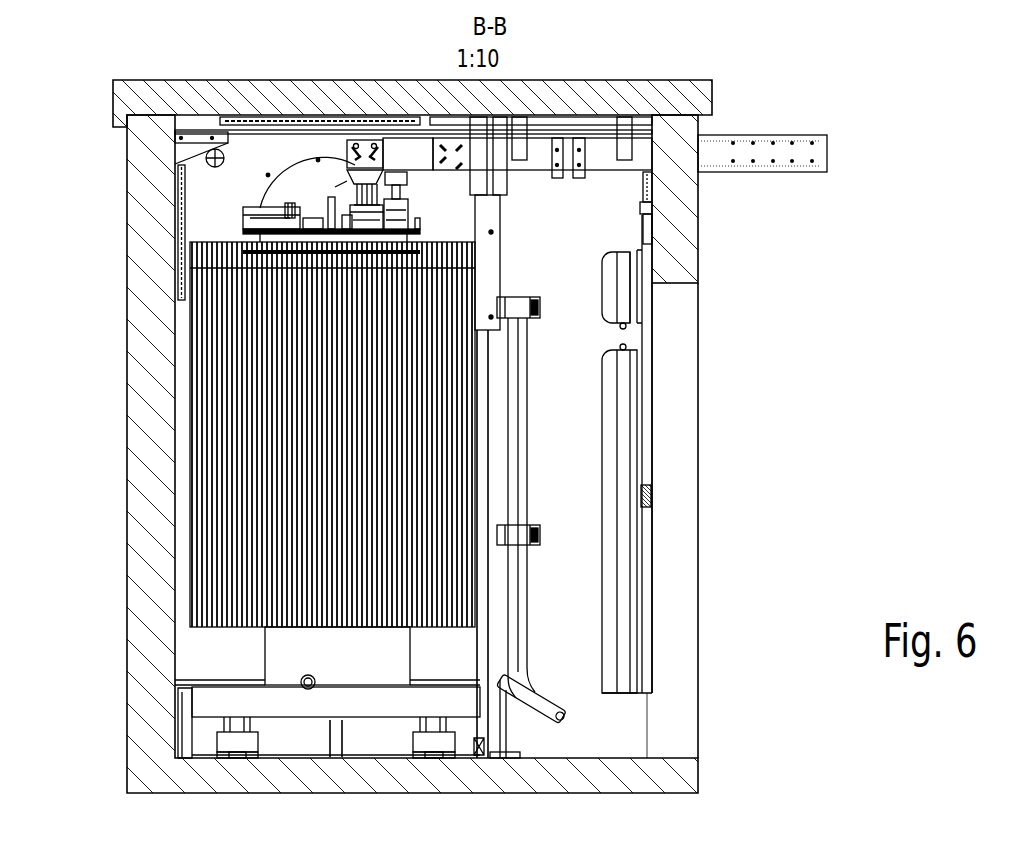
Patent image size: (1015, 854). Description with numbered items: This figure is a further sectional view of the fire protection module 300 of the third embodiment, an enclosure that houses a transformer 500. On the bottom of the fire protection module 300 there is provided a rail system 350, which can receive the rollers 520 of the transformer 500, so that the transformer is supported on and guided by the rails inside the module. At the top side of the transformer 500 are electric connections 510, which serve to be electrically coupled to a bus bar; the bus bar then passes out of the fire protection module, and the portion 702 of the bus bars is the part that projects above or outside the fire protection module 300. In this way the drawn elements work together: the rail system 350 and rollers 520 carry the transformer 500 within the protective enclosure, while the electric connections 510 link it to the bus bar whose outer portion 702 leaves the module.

The fire protection module 300 is at (150, 246).
The transformer 500 is at (225, 478).
The electric connections 510 is at (351, 142).
The rollers 520 is at (215, 745).
The rail system 350 is at (225, 756).
The portion of the bus bars 702 is at (766, 135).